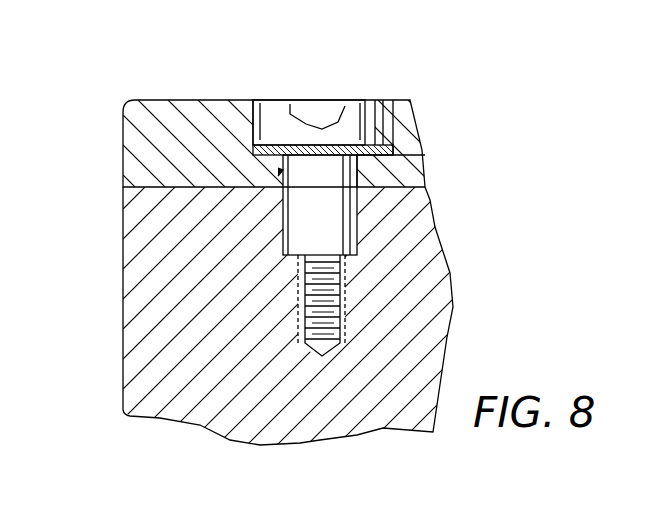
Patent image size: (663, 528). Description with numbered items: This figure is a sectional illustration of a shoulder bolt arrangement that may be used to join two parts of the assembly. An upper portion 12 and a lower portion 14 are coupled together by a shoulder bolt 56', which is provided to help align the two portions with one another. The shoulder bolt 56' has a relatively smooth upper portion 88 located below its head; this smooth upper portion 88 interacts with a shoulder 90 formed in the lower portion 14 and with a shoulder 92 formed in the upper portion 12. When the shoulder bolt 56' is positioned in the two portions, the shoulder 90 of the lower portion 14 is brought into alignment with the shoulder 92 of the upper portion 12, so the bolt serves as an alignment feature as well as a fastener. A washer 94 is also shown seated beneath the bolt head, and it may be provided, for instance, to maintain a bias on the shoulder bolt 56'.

The upper portion 12 is at (405, 302).
The lower portion 14 is at (200, 100).
The shoulder bolt 56' is at (328, 191).
The smooth upper portion 88 is at (330, 225).
The shoulder 90 is at (276, 172).
The shoulder 92 is at (272, 238).
The washer 94 is at (415, 152).